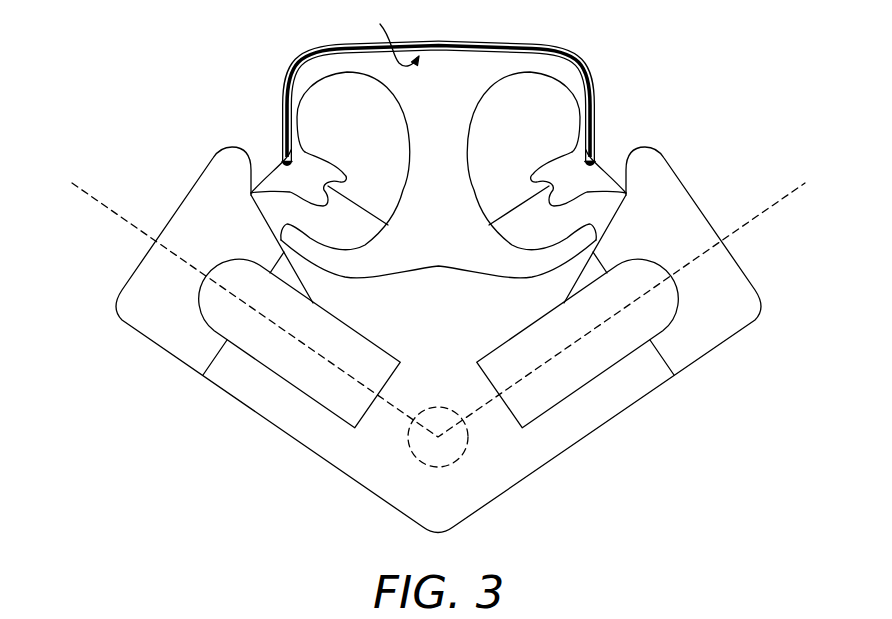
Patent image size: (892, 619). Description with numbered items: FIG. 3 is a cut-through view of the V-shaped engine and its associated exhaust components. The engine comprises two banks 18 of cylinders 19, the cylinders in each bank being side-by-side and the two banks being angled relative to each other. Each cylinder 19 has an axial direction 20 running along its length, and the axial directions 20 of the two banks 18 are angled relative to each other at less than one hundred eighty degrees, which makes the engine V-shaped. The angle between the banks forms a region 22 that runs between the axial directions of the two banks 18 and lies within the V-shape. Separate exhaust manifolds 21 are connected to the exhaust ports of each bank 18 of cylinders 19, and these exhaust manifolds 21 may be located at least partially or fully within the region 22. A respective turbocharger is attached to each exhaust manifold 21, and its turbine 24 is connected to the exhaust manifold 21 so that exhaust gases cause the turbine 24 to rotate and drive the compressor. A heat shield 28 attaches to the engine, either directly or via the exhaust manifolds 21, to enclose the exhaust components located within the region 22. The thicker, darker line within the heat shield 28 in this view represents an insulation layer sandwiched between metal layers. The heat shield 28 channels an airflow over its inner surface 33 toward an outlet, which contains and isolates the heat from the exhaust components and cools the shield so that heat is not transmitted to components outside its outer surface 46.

The bank of cylinders 18 is at (297, 428).
The cylinder 19 is at (260, 347).
The axial direction 20 is at (80, 190).
The exhaust manifold 21 is at (290, 203).
The region 22 is at (446, 88).
The turbine 24 is at (318, 100).
The heat shield 28 is at (531, 42).
The inner surface 33 is at (388, 35).
The outer surface 46 is at (596, 90).